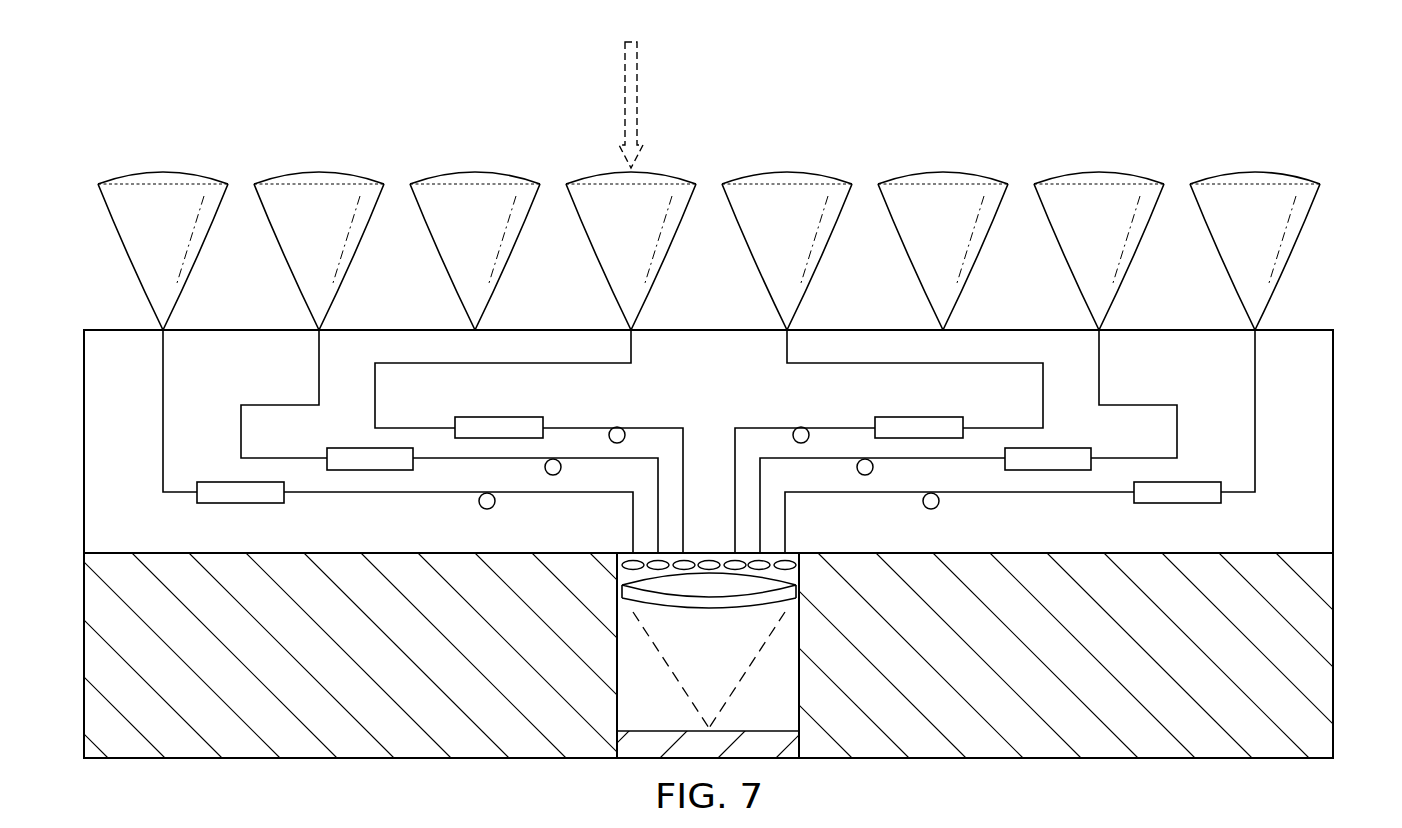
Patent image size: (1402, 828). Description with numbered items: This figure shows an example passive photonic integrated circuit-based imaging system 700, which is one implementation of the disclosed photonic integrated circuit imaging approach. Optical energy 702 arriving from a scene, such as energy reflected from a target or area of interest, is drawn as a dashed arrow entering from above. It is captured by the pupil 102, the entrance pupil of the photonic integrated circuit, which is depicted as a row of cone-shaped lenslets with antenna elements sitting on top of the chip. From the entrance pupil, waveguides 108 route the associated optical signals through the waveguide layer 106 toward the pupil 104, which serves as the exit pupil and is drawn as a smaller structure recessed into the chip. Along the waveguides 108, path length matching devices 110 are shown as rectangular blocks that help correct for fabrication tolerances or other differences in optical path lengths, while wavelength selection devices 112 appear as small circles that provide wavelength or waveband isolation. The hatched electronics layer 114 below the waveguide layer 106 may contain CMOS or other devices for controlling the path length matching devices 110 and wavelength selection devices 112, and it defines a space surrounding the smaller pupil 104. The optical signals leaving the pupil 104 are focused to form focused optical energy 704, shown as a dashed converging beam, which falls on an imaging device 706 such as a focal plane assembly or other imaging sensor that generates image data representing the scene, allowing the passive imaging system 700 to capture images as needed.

The passive photonic integrated circuit-based imaging system 700 is at (897, 98).
The optical energy 702 is at (626, 96).
The pupil 102 is at (1306, 263).
The pupil 104 is at (715, 553).
The waveguide layer 106 is at (92, 442).
The waveguides 108 is at (318, 376).
The path length matching devices 110 is at (215, 482).
The wavelength selection devices 112 is at (604, 430).
The electronics layer 114 is at (92, 655).
The focused optical energy 704 is at (670, 650).
The imaging device 706 is at (762, 738).